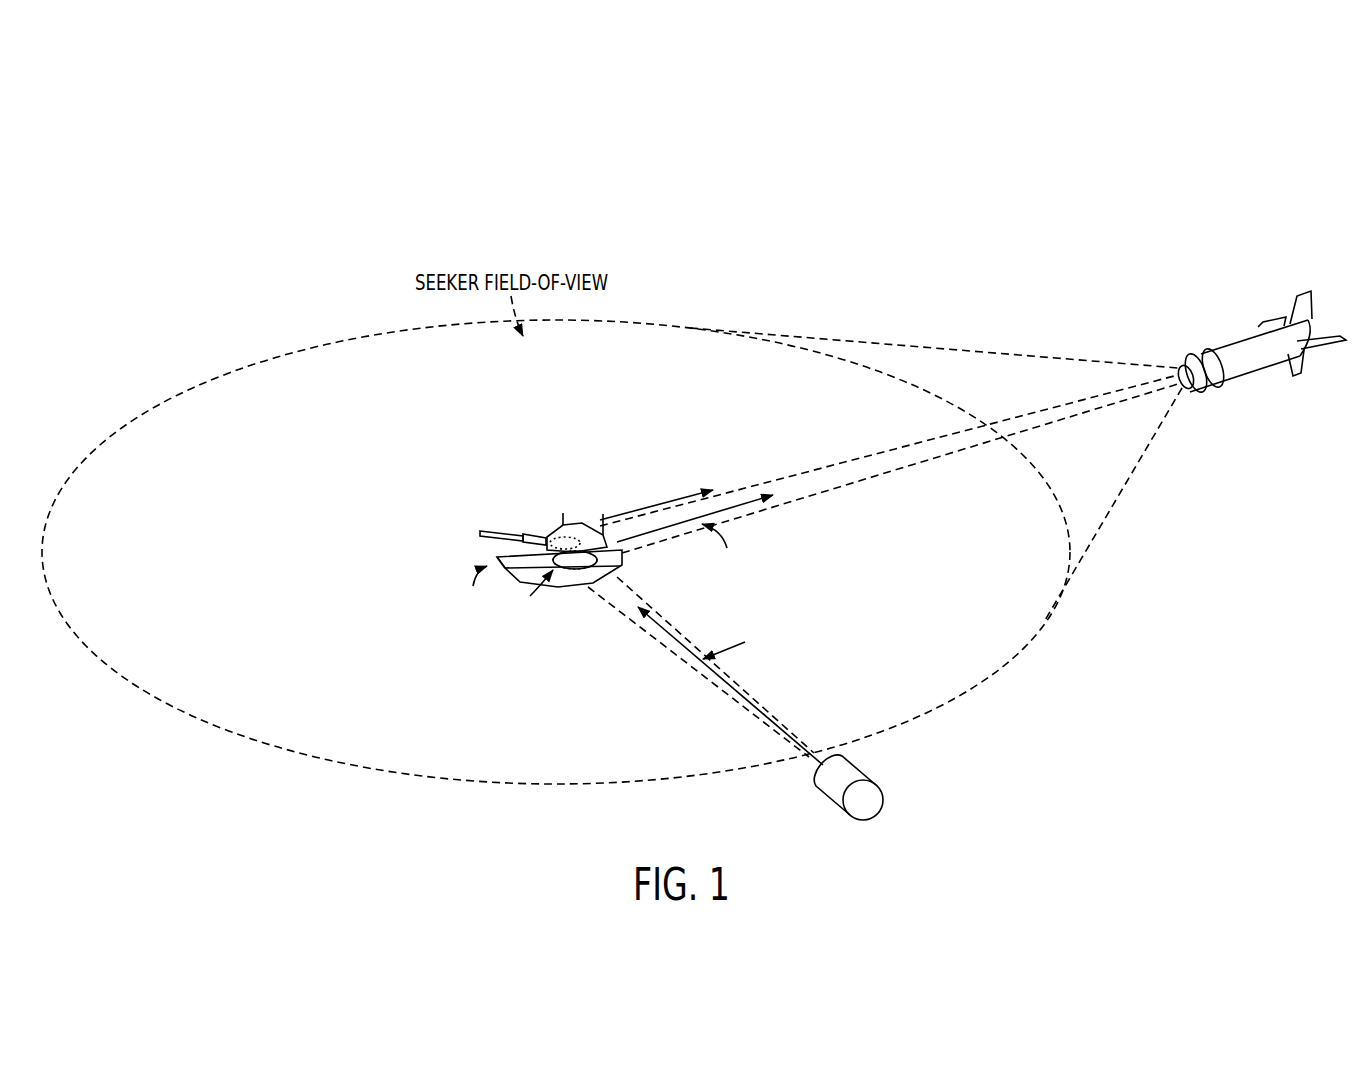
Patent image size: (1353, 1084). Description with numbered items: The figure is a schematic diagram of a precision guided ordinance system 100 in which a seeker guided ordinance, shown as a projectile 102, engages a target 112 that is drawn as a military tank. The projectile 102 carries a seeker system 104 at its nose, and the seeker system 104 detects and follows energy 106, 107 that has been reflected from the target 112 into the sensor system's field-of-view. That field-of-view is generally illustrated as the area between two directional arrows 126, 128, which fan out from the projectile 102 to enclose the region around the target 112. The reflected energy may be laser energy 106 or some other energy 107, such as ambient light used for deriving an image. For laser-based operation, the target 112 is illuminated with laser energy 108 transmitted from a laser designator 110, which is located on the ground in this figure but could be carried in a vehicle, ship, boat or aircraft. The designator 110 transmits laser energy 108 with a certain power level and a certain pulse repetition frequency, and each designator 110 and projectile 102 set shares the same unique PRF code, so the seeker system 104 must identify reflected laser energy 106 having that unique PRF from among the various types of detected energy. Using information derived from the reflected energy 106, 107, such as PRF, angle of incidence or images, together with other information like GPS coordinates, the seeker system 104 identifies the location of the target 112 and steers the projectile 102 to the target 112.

The precision guided ordinance system 100 is at (1212, 198).
The projectile 102 is at (1232, 350).
The seeker system 104 is at (1203, 398).
The laser energy 106 is at (800, 476).
The other energy 107 is at (664, 503).
The laser energy 108 is at (667, 636).
The laser designator 110 is at (885, 790).
The target 112 is at (508, 534).
The directional arrow 126 is at (1108, 522).
The directional arrow 128 is at (956, 346).